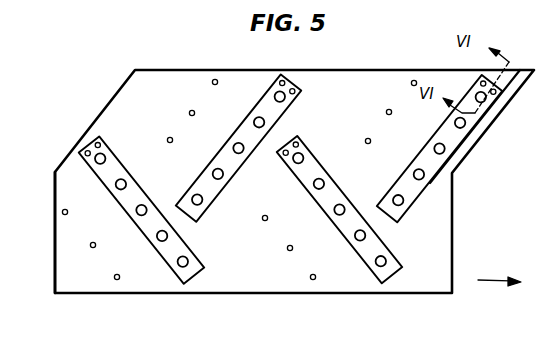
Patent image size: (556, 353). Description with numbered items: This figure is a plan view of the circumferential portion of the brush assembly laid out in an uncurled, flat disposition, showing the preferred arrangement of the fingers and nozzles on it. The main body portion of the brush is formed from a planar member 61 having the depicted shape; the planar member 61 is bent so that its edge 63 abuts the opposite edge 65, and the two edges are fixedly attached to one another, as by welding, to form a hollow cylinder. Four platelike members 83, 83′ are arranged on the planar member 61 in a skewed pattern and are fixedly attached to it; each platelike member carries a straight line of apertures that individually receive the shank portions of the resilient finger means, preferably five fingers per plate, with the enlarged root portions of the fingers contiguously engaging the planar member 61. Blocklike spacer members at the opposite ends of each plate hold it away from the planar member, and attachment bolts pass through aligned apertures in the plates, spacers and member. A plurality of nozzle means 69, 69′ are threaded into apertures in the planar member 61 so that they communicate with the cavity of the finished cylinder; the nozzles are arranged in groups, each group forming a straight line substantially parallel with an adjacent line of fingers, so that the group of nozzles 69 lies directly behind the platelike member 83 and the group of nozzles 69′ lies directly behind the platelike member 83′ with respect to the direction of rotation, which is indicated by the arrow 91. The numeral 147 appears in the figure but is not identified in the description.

The planar member 61 is at (352, 90).
The edge 63 is at (55, 197).
The edge 65 is at (483, 138).
The nozzle means 69 is at (411, 83).
The nozzle means 69′ is at (310, 277).
The platelike member 83 is at (429, 172).
The platelike member 83′ is at (367, 250).
The arrow 91 is at (499, 280).
The corner 147 is at (3, 124).